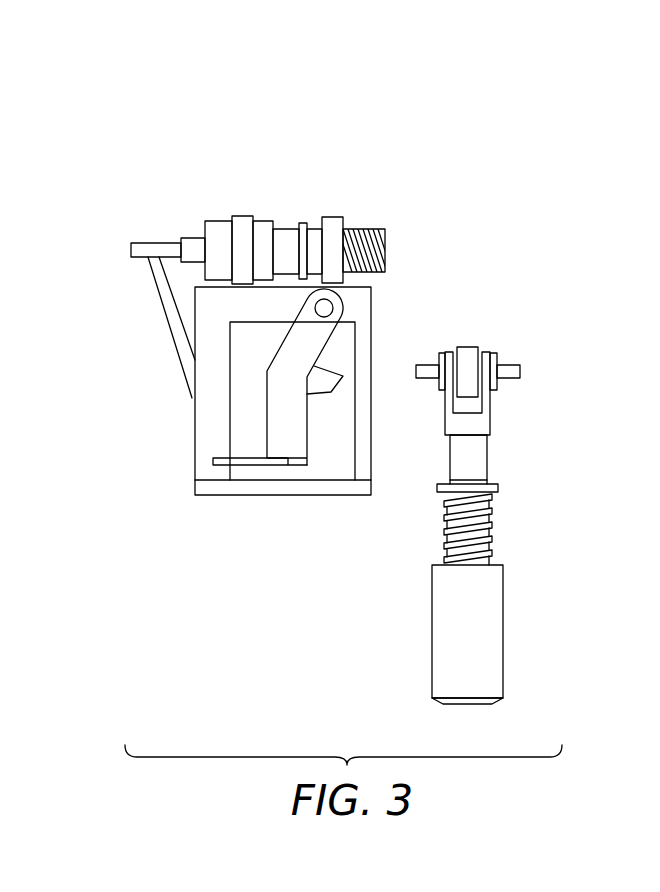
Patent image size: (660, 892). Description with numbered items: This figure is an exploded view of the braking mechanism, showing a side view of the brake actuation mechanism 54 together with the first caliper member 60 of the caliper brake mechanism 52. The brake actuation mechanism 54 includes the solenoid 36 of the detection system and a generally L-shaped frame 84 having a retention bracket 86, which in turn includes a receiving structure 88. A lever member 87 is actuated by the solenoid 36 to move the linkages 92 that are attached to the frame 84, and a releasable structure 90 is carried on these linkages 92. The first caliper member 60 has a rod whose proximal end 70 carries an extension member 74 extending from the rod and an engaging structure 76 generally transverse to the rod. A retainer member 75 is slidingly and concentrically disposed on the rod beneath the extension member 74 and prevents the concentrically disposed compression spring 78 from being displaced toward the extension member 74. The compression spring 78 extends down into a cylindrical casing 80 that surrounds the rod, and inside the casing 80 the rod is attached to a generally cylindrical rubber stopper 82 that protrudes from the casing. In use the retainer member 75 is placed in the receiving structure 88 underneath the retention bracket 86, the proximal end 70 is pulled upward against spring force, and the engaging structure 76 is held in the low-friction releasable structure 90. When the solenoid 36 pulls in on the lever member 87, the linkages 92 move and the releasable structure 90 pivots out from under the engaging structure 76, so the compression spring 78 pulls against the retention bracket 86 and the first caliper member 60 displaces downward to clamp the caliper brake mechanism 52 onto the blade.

The brake actuation mechanism 54 is at (390, 176).
The solenoid 36 is at (287, 235).
The lever member 87 is at (180, 333).
The frame 84 is at (202, 408).
The receiving structure 88 is at (337, 486).
The retention bracket 86 is at (272, 486).
The linkages 92 is at (322, 342).
The releasable structure 90 is at (327, 382).
The caliper brake mechanism 52 is at (566, 486).
The extension member 74 is at (482, 427).
The engaging structure 76 is at (468, 353).
The proximal end 70 is at (453, 427).
The first caliper member 60 is at (462, 462).
The retainer member 75 is at (497, 490).
The compression spring 78 is at (482, 527).
The cylindrical casing 80 is at (498, 618).
The rubber stopper 82 is at (492, 703).